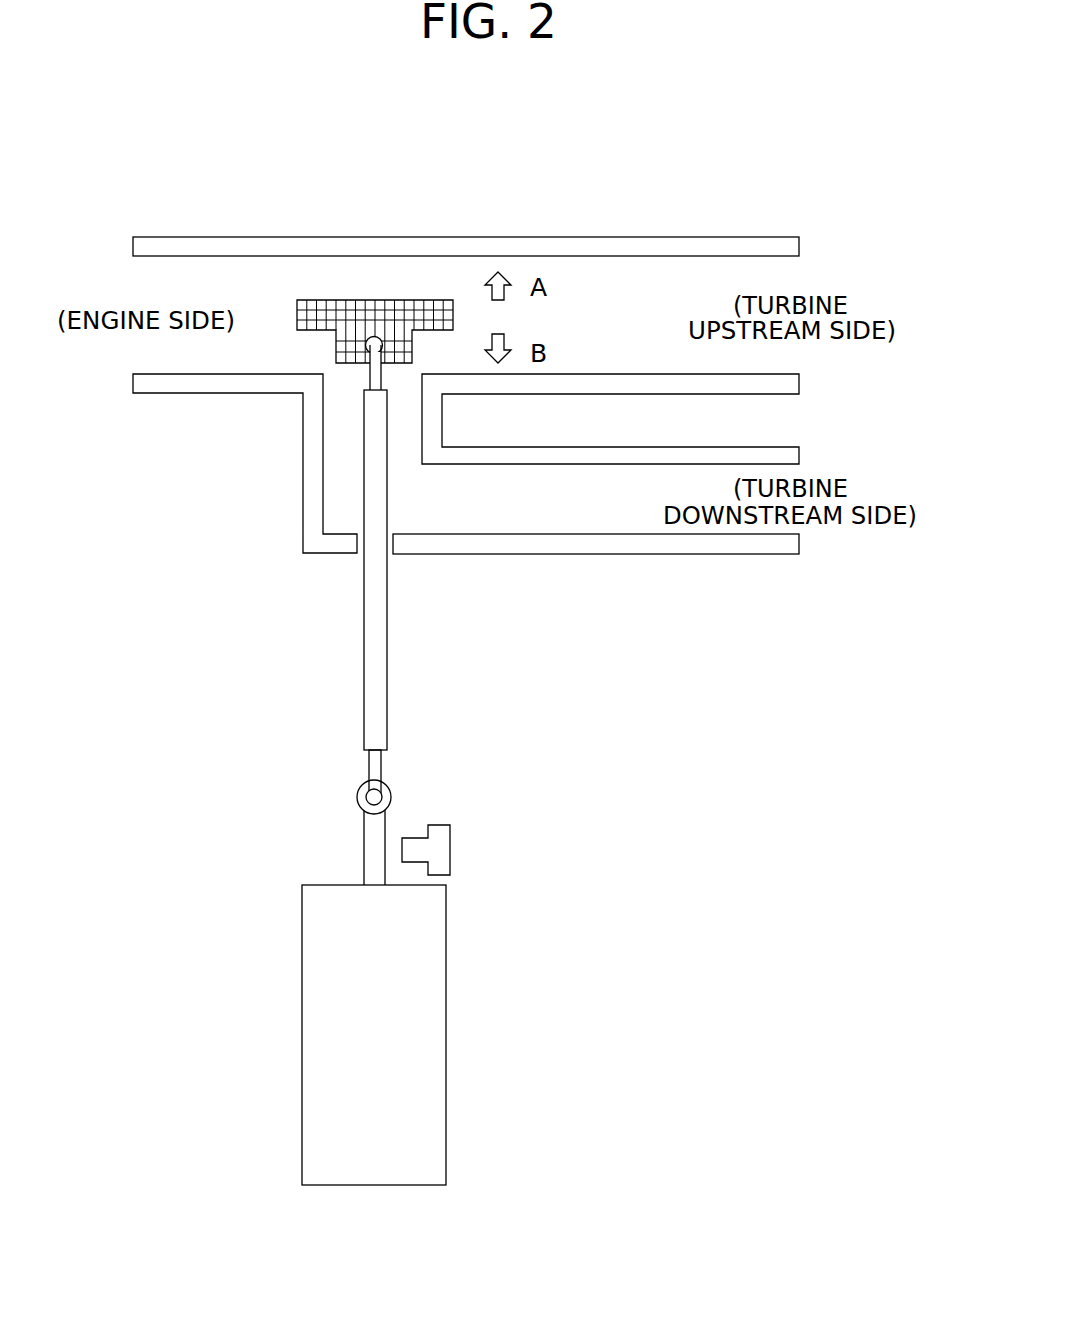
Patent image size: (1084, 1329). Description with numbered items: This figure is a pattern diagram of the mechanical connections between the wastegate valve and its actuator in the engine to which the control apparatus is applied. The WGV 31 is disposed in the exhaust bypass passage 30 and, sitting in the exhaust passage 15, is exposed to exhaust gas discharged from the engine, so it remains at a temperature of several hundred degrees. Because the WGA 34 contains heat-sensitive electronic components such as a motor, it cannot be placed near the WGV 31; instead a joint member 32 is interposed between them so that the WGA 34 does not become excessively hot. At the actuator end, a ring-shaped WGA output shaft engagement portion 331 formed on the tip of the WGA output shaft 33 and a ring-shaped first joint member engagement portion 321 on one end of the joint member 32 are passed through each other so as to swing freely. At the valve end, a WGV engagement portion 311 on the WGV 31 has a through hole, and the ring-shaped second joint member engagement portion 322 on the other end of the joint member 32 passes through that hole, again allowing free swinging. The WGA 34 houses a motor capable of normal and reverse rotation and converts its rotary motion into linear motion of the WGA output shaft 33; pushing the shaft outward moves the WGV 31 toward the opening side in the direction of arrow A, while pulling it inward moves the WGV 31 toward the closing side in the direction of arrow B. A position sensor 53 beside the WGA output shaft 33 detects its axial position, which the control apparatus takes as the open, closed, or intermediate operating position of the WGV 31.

The exhaust passage 15 is at (622, 237).
The exhaust bypass passage 30 is at (622, 554).
The WGV 31 is at (297, 317).
The WGV engagement portion 311 is at (364, 342).
The second joint member engagement portion 322 is at (368, 376).
The joint member 32 is at (364, 632).
The first joint member engagement portion 321 is at (369, 763).
The WGA output shaft engagement portion 331 is at (392, 793).
The WGA output shaft 33 is at (364, 851).
The position sensor 53 is at (452, 848).
The WGA 34 is at (312, 997).